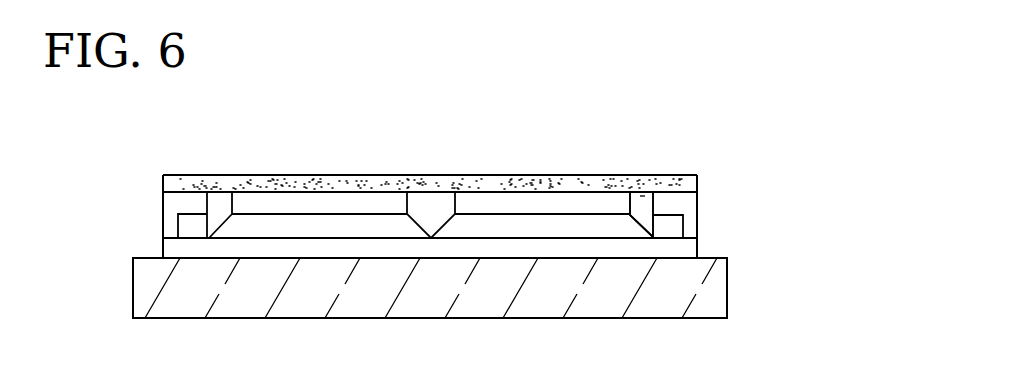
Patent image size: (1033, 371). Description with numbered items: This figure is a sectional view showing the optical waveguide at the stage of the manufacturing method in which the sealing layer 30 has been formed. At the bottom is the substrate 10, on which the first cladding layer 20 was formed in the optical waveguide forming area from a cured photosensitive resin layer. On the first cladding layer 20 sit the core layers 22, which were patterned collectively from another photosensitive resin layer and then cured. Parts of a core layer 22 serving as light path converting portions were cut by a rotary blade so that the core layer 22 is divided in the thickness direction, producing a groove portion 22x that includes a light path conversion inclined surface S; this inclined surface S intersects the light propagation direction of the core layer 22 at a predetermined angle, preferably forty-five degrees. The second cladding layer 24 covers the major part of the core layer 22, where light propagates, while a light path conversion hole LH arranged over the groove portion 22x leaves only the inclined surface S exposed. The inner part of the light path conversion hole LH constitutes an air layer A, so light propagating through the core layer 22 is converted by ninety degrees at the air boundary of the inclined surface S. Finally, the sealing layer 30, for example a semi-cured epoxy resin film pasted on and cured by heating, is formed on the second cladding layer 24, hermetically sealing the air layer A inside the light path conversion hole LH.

The substrate 10 is at (718, 294).
The first cladding layer 20 is at (690, 251).
The core layer 22 is at (677, 228).
The groove portion 22x is at (658, 222).
The second cladding layer 24 is at (510, 200).
The sealing layer 30 is at (433, 182).
The light path conversion hole LH is at (655, 210).
The air layer A is at (641, 199).
The light path conversion inclined surface S is at (640, 224).